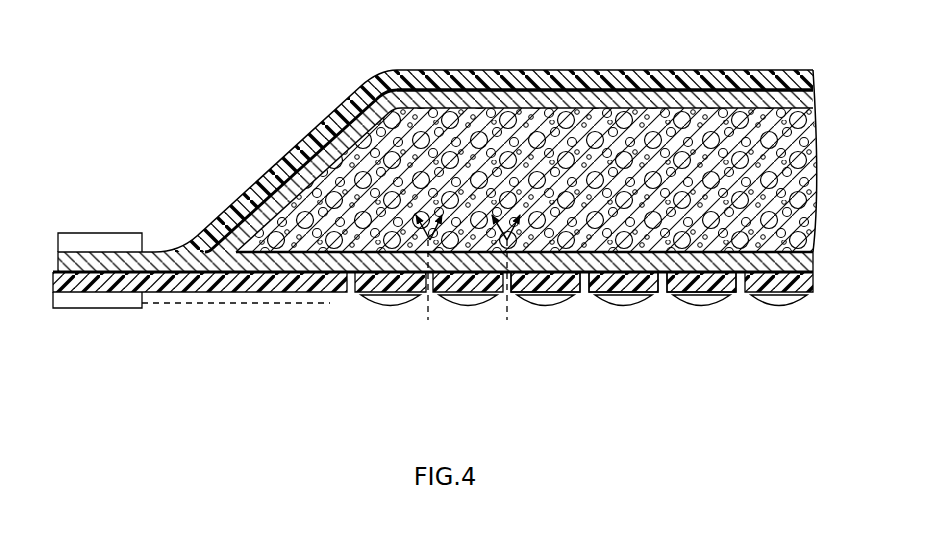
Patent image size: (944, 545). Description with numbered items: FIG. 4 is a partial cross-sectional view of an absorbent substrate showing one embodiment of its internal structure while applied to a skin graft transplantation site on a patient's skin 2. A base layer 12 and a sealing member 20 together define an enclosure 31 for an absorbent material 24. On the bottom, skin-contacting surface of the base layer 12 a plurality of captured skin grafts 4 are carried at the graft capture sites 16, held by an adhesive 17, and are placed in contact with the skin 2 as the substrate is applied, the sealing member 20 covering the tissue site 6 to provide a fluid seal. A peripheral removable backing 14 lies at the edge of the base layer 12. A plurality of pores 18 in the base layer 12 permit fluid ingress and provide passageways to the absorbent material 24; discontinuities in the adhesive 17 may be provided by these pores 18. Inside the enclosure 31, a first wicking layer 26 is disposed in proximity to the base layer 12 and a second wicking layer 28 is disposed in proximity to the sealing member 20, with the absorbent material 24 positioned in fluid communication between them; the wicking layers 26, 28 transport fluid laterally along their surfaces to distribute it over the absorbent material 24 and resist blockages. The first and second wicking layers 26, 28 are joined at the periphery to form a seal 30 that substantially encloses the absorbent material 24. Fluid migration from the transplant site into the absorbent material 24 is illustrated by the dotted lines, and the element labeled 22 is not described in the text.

The skin 2 is at (280, 303).
The skin grafts 4 is at (705, 296).
The tissue site 6 is at (436, 331).
The base layer 12 is at (780, 293).
The peripheral removable backing 14 is at (113, 303).
The sites 16 is at (735, 296).
The adhesive 17 is at (667, 297).
The pores 18 is at (583, 293).
The sealing member 20 is at (264, 170).
The terminal 22 is at (84, 232).
The absorbent material 24 is at (795, 147).
The first wicking layer 26 is at (345, 270).
The second wicking layer 28 is at (488, 100).
The seal 30 is at (253, 241).
The enclosure 31 is at (352, 122).